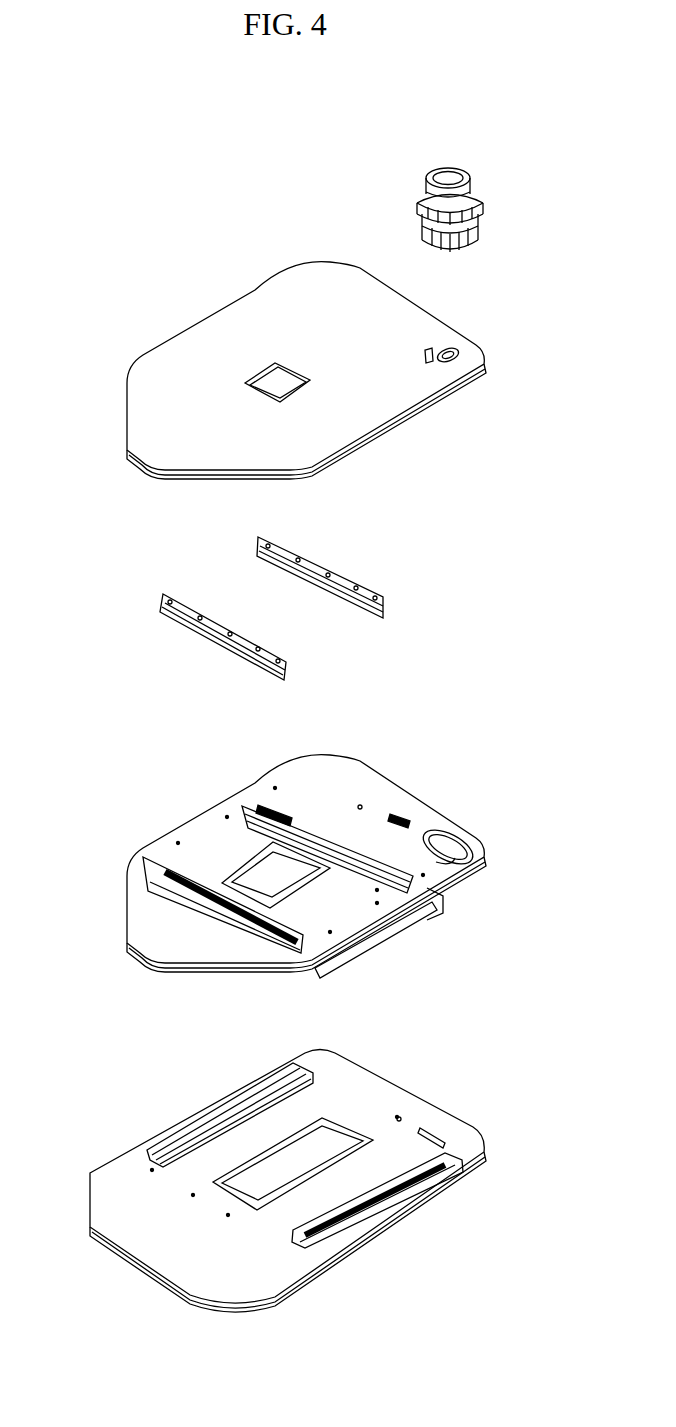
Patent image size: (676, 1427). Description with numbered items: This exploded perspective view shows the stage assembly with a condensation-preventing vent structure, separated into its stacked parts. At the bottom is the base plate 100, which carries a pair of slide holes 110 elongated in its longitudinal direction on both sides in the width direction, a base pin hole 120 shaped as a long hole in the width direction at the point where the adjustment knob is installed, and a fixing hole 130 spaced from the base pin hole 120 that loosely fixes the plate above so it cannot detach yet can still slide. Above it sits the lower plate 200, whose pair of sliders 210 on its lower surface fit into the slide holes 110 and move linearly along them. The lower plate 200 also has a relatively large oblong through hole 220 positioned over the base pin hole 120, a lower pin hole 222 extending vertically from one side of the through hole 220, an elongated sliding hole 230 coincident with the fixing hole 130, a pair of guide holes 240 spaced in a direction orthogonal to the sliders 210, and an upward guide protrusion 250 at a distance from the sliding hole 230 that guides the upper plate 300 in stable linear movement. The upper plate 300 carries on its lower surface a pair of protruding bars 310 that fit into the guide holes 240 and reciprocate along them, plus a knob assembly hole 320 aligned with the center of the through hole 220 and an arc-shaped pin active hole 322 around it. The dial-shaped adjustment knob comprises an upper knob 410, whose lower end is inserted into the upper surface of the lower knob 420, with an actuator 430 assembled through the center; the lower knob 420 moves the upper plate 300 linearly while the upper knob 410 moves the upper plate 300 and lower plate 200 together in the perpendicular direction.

The base plate 100 is at (140, 1265).
The slide holes 110 is at (170, 1138).
The base pin hole 120 is at (447, 1139).
The fixing hole 130 is at (402, 1118).
The lower plate 200 is at (135, 945).
The sliders 210 is at (385, 947).
The through hole 220 is at (458, 838).
The lower pin hole 222 is at (443, 868).
The sliding hole 230 is at (402, 818).
The guide holes 240 is at (150, 866).
The guide protrusion 250 is at (365, 802).
The upper plate 300 is at (155, 478).
The protruding bars 310 is at (195, 640).
The knob assembly hole 320 is at (452, 352).
The pin active hole 322 is at (437, 370).
The upper knob 410 is at (428, 176).
The lower knob 420 is at (418, 204).
The actuator 430 is at (462, 245).